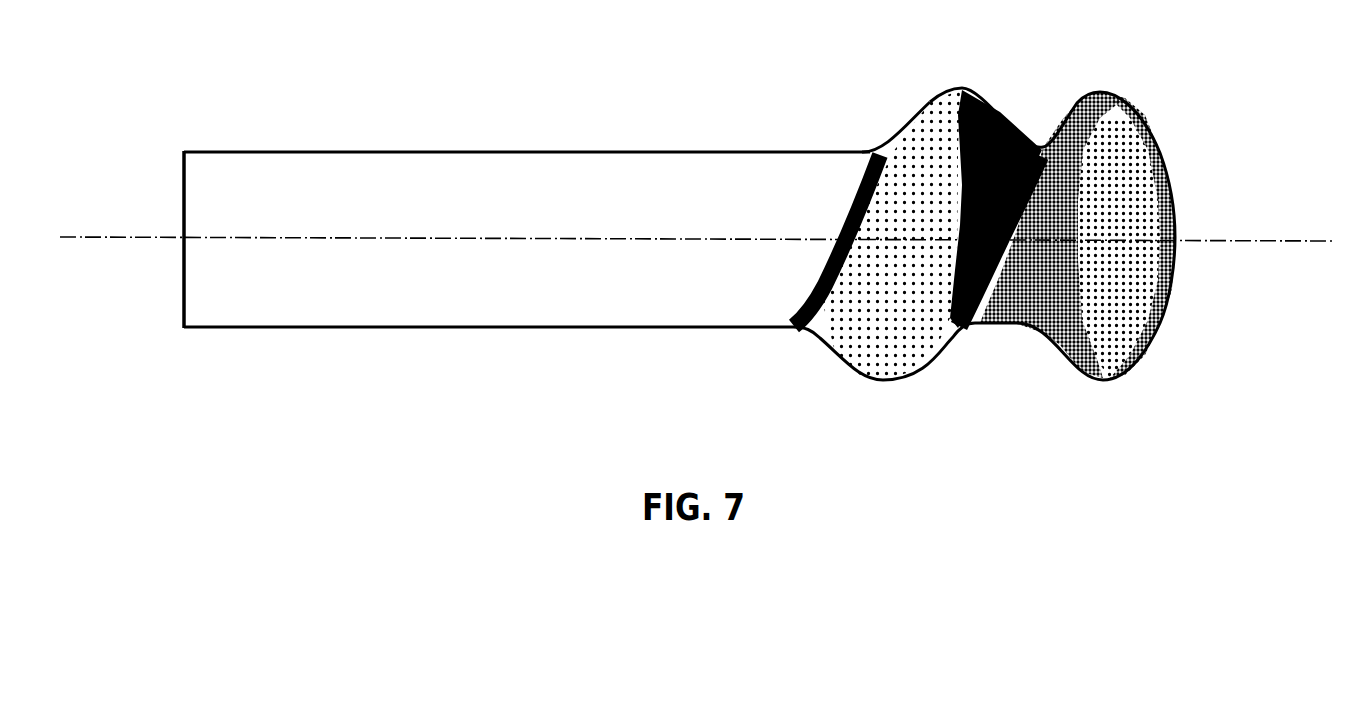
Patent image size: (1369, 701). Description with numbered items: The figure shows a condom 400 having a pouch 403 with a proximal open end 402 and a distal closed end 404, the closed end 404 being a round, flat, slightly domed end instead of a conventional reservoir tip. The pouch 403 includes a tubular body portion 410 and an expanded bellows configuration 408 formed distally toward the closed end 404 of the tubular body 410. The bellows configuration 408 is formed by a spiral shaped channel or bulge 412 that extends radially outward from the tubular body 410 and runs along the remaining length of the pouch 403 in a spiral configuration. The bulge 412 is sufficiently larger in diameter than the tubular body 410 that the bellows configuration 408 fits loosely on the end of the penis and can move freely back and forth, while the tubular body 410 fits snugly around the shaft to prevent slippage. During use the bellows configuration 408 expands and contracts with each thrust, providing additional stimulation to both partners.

The condom 400 is at (726, 83).
The proximal open end 402 is at (183, 177).
The pouch 403 is at (748, 152).
The distal closed end 404 is at (1168, 162).
The bellows configuration 408 is at (1048, 98).
The tubular body portion 410 is at (522, 152).
The spiral shaped bulge 412 is at (970, 88).